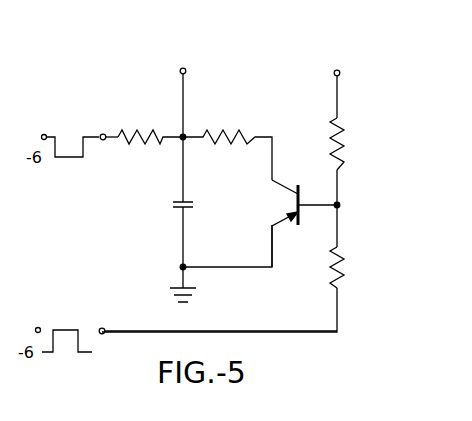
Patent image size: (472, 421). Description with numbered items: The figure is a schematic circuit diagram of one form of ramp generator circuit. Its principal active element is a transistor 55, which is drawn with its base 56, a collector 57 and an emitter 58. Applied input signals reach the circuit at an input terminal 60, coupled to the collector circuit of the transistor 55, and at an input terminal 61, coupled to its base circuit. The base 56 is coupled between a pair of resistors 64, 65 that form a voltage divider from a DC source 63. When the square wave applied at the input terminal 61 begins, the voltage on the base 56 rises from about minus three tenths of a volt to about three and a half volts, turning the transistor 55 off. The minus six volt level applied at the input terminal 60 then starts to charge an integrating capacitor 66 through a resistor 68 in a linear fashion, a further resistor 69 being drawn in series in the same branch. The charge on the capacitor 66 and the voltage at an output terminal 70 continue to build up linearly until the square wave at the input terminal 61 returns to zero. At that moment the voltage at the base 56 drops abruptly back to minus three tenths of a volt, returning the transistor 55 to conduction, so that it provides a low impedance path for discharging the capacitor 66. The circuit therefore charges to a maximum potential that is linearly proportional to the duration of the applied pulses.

The transistor 55 is at (284, 213).
The base 56 is at (288, 205).
The collector 57 is at (281, 185).
The emitter 58 is at (282, 222).
The input terminal 60 is at (102, 134).
The input terminal 61 is at (102, 328).
The DC source 63 is at (340, 73).
The resistor 64 is at (343, 131).
The resistor 65 is at (343, 268).
The integrating capacitor 66 is at (176, 211).
The resistor 68 is at (144, 129).
The resistor 15K 69 is at (231, 130).
The output terminal 70 is at (186, 71).